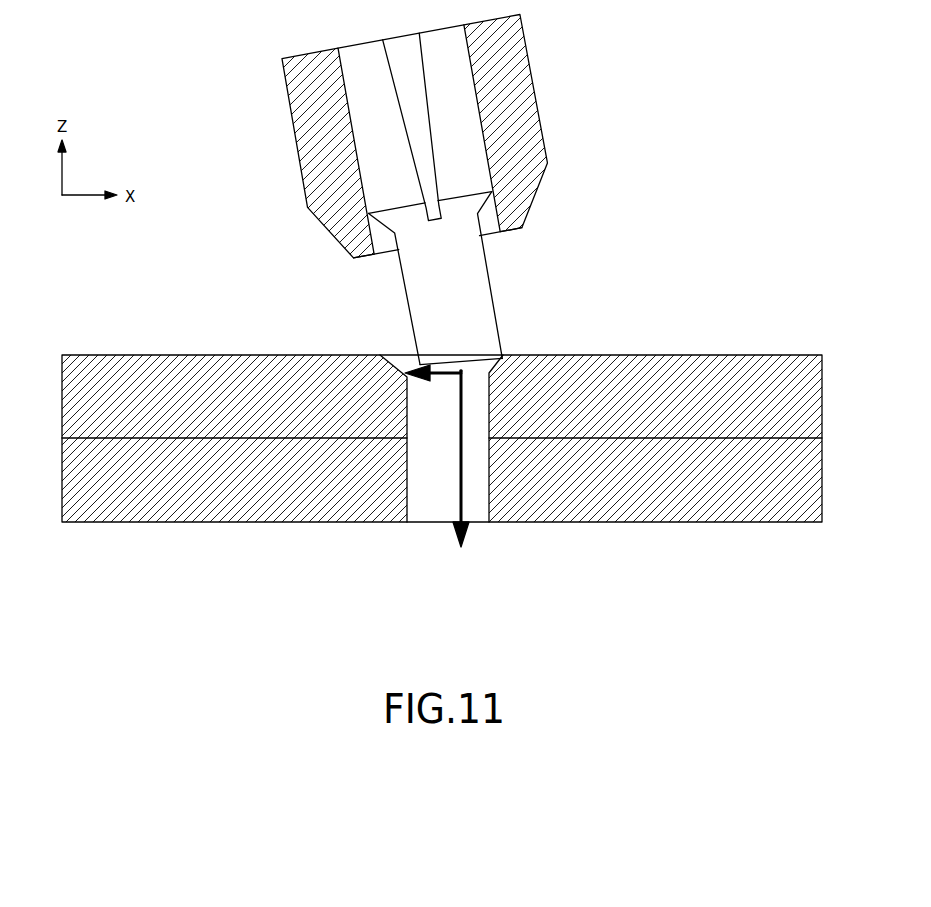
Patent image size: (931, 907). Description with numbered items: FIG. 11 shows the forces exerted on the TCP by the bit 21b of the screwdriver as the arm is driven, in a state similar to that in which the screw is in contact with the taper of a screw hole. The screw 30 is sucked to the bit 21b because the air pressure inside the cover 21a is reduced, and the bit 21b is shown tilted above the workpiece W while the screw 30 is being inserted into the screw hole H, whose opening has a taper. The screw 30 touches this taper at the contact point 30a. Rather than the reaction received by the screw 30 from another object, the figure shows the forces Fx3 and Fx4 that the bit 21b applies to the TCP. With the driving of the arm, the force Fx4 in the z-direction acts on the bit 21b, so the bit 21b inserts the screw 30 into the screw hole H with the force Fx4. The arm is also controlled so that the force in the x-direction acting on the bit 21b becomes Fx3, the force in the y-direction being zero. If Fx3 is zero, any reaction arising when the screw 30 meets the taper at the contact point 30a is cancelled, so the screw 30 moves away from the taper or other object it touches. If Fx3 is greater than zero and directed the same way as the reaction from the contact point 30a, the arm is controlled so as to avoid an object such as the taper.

The cover 21a is at (448, 213).
The bit 21b is at (320, 128).
The screw 30 is at (428, 283).
The contact point 30a is at (542, 332).
The workpiece W is at (429, 417).
The screw hole H is at (432, 465).
The element TCP is at (535, 309).
The force in the x-direction Fx3 is at (433, 387).
The force in the z-direction Fx4 is at (446, 460).